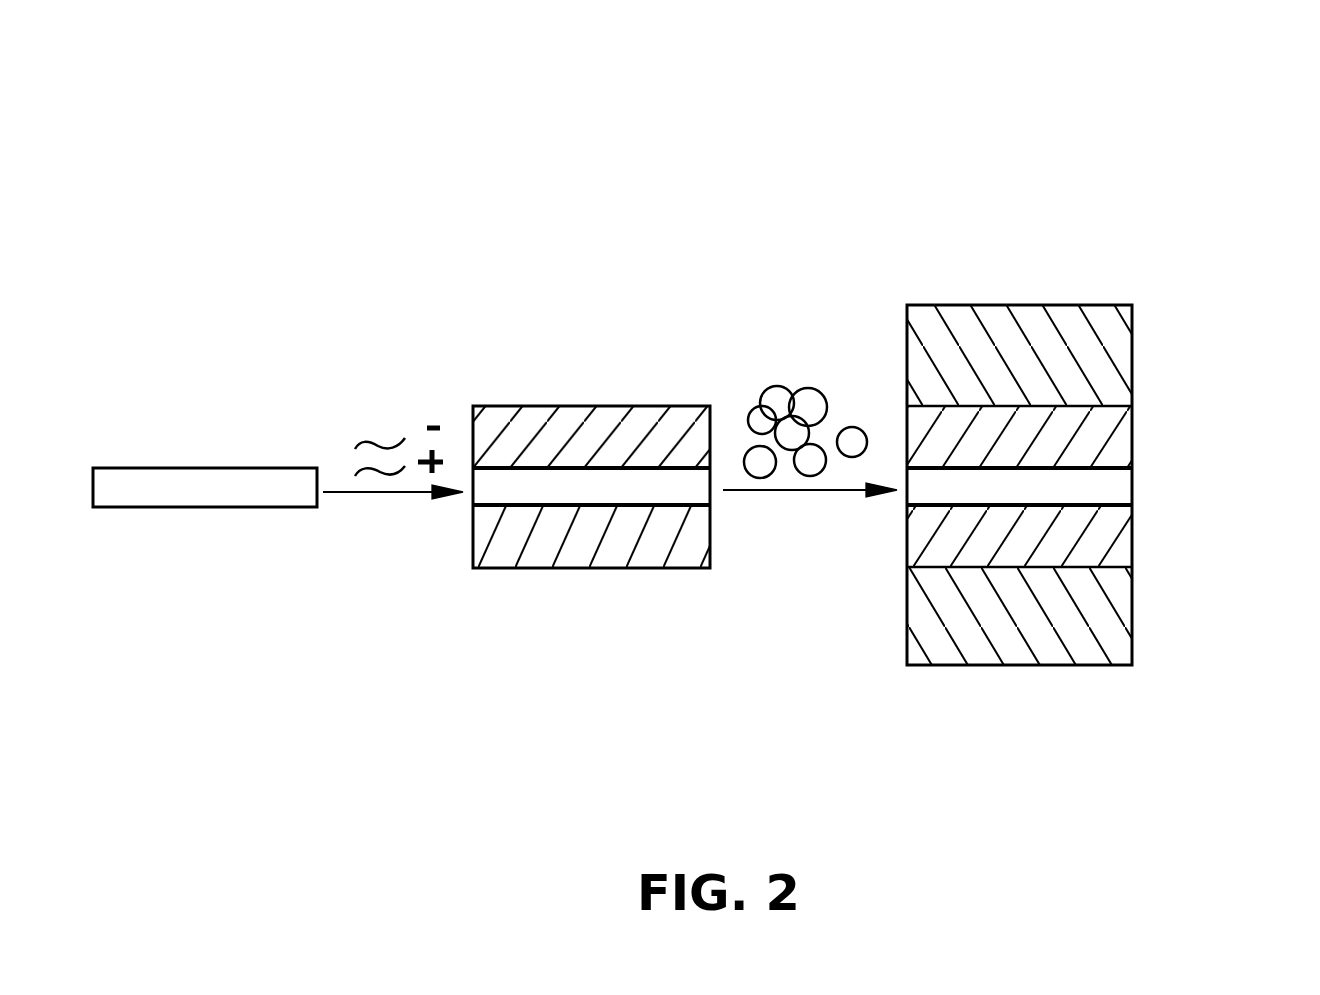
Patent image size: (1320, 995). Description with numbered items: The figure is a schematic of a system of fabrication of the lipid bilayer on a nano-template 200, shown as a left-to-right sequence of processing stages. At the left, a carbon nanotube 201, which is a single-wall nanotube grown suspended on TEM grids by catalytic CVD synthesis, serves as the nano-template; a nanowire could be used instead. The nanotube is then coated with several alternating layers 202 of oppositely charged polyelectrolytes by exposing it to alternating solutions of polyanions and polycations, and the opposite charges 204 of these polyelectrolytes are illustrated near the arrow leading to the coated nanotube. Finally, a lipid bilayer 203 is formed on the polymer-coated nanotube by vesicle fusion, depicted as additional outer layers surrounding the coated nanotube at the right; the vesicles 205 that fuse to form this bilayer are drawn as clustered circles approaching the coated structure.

The system of fabrication of the lipid bilayer on a nano-template 200 is at (1125, 170).
The carbon nanotube 201 is at (262, 507).
The alternating layers of oppositely charged polyelectrolytes 202 is at (603, 568).
The lipid bilayer 203 is at (1020, 665).
The opposite charges 204 is at (355, 449).
The particles 205 is at (765, 386).